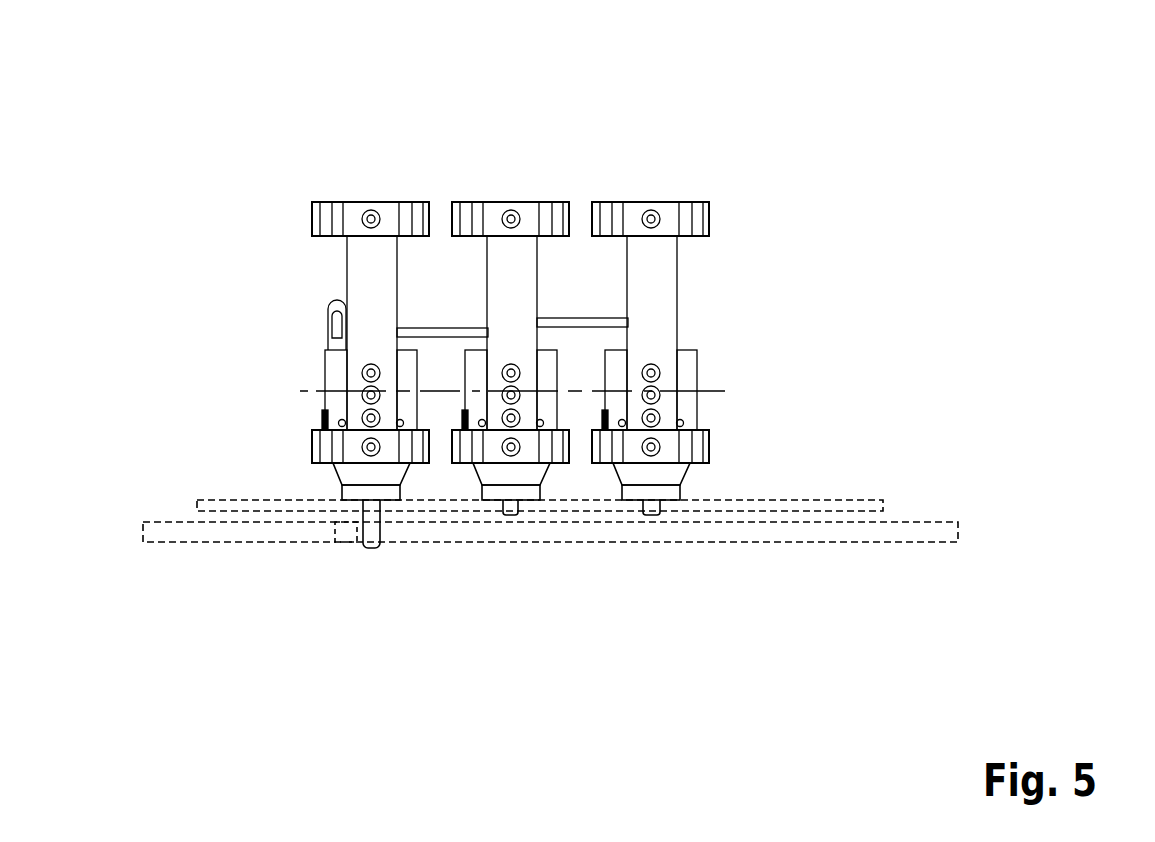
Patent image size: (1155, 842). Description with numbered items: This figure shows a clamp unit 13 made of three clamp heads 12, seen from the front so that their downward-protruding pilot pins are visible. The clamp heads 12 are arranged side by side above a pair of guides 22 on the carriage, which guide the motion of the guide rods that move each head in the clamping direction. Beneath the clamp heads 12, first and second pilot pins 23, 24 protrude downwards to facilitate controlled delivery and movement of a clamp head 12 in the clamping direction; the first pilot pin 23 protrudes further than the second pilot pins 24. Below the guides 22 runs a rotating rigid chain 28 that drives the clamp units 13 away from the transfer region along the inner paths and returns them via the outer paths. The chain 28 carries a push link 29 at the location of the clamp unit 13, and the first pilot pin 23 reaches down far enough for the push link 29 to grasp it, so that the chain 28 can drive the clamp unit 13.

The clamp unit 13 is at (718, 153).
The clamp head 12 is at (336, 362).
The guide 22 is at (822, 498).
The first pilot pin 23 is at (368, 530).
The second pilot pin 24 is at (508, 505).
The rotating rigid chain 28 is at (228, 543).
The push link 29 is at (345, 530).